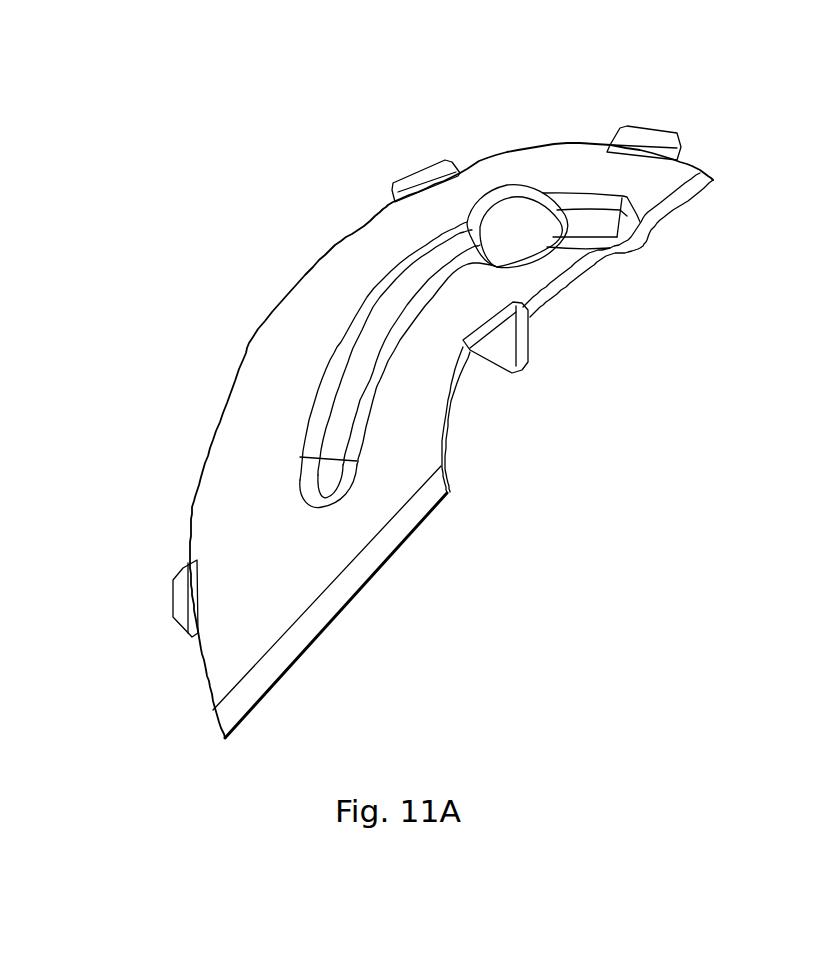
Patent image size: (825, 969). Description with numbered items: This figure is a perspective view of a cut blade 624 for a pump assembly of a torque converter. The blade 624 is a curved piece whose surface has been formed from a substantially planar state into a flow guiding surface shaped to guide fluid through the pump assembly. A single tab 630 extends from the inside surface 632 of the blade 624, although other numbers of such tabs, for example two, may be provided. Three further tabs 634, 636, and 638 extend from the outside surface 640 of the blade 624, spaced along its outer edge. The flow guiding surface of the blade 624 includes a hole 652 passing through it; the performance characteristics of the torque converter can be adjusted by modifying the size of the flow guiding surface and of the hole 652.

The blade 624 is at (290, 538).
The tab 630 is at (507, 342).
The inside surface 632 is at (452, 437).
The tab 634 is at (650, 139).
The tab 636 is at (415, 172).
The tab 638 is at (173, 588).
The outside surface 640 is at (700, 163).
The hole 652 is at (507, 187).